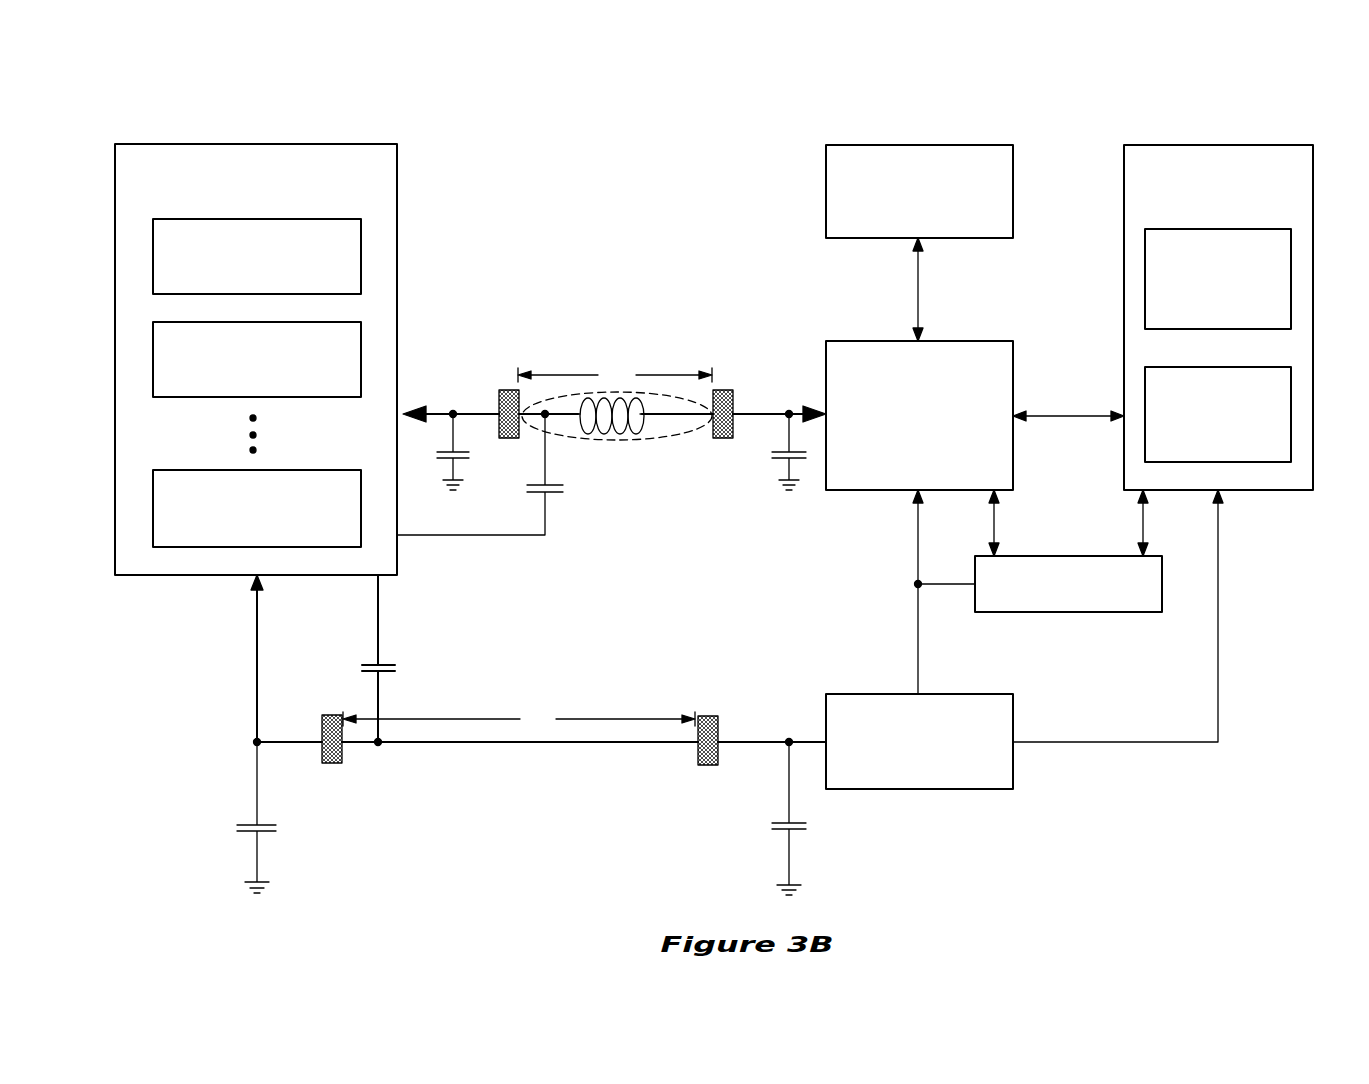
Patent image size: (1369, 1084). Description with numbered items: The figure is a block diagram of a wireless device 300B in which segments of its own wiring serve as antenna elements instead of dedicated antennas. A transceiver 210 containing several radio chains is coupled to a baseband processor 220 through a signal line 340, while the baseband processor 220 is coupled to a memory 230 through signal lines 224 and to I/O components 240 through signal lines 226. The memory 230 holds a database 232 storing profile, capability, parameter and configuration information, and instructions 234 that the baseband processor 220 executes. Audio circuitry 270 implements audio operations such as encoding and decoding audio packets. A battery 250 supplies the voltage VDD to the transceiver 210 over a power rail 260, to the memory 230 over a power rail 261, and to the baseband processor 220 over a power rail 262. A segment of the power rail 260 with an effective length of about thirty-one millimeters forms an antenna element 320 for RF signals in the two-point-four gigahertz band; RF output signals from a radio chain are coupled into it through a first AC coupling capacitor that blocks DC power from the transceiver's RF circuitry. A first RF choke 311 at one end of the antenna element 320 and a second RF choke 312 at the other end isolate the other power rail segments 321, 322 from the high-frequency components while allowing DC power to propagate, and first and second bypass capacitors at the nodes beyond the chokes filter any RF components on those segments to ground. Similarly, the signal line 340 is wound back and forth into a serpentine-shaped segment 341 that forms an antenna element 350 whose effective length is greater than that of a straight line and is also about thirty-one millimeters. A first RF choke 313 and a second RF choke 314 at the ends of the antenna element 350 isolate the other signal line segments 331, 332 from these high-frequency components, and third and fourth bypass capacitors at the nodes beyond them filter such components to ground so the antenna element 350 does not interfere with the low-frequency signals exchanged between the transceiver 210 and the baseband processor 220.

The wireless device 300B is at (152, 82).
The transceiver 210 is at (256, 359).
The input/output (I/O) components 240 is at (919, 191).
The baseband processor 220 is at (919, 415).
The memory 230 is at (1218, 317).
The database 232 is at (1218, 279).
The instructions 234 is at (1218, 414).
The audio circuitry 270 is at (1068, 551).
The battery 250 is at (919, 741).
The signal lines 226 is at (918, 282).
The signal lines 224 is at (1065, 414).
The power rail 262 is at (918, 665).
The power rail 261 is at (1180, 743).
The power rail 260 is at (240, 583).
The signal line 340 is at (815, 305).
The first RF choke 313 is at (506, 388).
The second RF choke 314 is at (722, 388).
The serpentine-shaped segment 341 is at (575, 450).
The antenna element 350 is at (679, 450).
The other signal line segment 331 is at (470, 398).
The other signal line segment 332 is at (762, 398).
The first RF choke 311 is at (333, 715).
The second RF choke 312 is at (708, 716).
The other power rail segment 321 is at (276, 635).
The other power rail segment 322 is at (742, 722).
The antenna element 320 is at (548, 758).